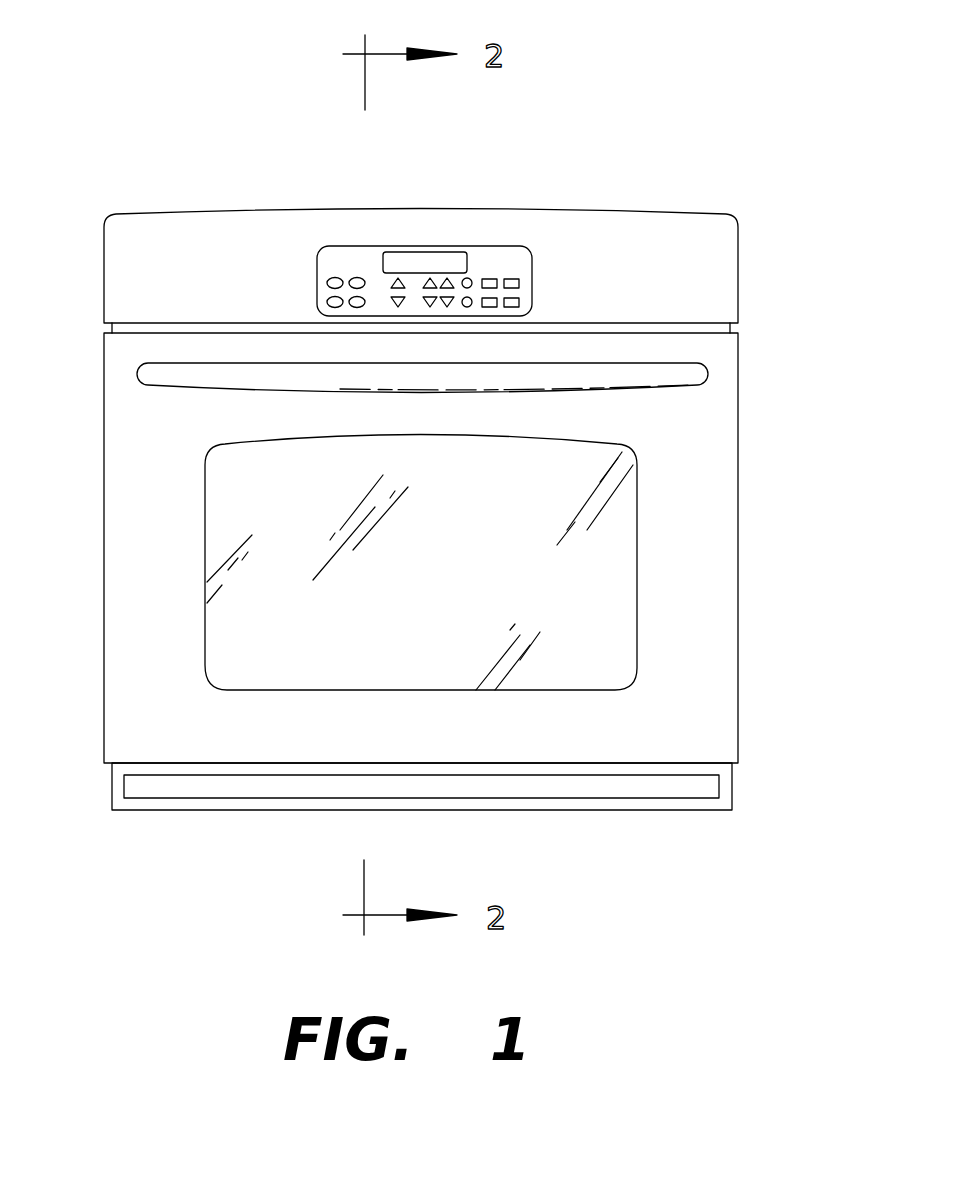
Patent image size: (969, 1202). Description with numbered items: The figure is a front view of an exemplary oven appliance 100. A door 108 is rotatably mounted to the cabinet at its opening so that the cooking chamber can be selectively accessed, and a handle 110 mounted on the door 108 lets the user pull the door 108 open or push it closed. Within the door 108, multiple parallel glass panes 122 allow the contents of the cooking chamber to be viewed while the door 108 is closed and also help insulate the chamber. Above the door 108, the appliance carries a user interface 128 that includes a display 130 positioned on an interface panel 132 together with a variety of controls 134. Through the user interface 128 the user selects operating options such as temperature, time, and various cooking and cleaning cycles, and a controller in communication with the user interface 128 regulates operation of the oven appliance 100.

The oven appliance 100 is at (177, 148).
The door 108 is at (697, 487).
The handle 110 is at (683, 373).
The glass panes 122 is at (617, 580).
The user interface 128 is at (500, 262).
The display 130 is at (425, 262).
The interface panel 132 is at (660, 240).
The controls 134 is at (330, 280).